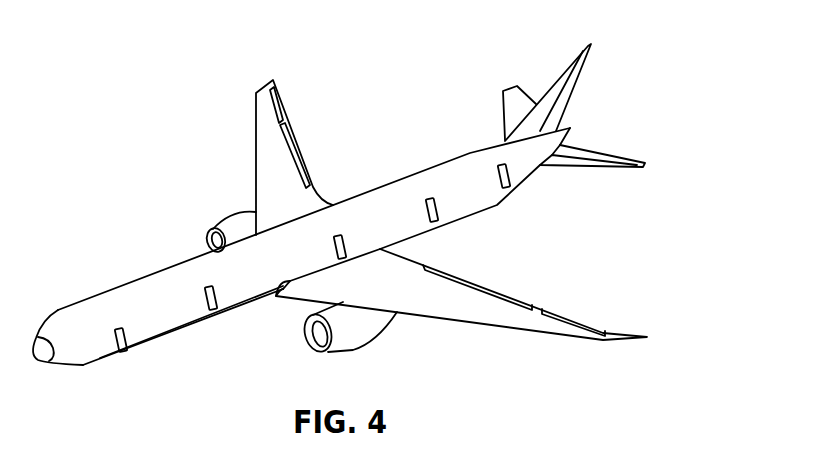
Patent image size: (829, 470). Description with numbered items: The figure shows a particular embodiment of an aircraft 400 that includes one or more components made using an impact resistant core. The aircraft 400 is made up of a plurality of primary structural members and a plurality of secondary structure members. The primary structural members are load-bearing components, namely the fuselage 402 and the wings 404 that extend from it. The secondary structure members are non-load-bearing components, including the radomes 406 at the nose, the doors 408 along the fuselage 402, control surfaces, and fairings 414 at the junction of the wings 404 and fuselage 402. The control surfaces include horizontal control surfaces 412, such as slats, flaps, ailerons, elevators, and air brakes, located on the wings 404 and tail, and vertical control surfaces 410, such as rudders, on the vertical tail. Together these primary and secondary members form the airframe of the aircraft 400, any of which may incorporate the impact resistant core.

The aircraft 400 is at (346, 220).
The fuselage 402 is at (398, 192).
The wings 404 is at (395, 278).
The radomes 406 is at (38, 361).
The doors 408 is at (118, 343).
The vertical control surfaces 410 is at (574, 85).
The horizontal control surfaces 412 is at (493, 292).
The fairings 414 is at (288, 290).